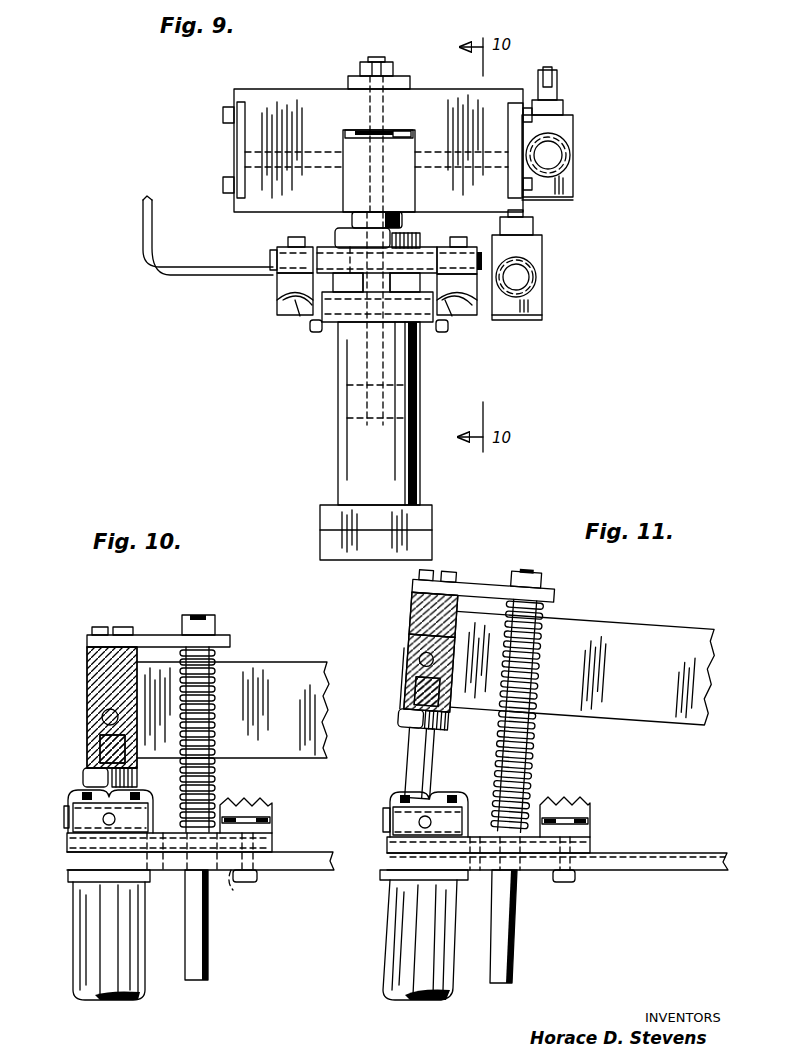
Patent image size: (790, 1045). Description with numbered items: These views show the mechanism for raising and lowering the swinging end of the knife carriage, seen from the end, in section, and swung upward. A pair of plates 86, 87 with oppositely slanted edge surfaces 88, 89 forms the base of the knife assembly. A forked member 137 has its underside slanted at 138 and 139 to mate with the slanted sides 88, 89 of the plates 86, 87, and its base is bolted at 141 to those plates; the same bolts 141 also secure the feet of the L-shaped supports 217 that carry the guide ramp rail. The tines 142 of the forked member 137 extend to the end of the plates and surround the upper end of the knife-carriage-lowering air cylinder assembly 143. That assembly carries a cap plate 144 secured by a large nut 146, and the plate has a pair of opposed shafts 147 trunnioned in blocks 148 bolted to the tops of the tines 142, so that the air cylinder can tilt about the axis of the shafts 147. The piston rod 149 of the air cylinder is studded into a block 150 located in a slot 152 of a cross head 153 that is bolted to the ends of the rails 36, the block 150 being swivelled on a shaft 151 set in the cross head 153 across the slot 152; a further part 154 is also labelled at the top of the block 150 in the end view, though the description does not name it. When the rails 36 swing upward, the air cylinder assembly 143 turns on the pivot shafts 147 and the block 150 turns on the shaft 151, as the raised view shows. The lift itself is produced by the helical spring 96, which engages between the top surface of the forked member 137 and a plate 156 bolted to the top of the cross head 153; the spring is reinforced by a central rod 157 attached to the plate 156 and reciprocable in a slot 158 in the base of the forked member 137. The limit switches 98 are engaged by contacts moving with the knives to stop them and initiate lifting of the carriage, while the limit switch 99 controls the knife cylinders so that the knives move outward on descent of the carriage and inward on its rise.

In FIG. 9, the rails 36 is at (237, 140).
In FIG. 10, the rails 36 is at (280, 668).
In FIG. 11, the rails 36 is at (636, 615).
In FIG. 9, the plate 86 is at (313, 332).
In FIG. 9, the plate 87 is at (441, 332).
In FIG. 9, the slanted edge surface 88 is at (292, 306).
In FIG. 9, the slanted edge surface 89 is at (467, 300).
In FIG. 10, the helical spring 96 is at (212, 670).
In FIG. 11, the helical spring 96 is at (541, 660).
In FIG. 9, the limit switches 98 is at (573, 128).
In FIG. 9, the limit switch 99 is at (543, 255).
In FIG. 10, the forked member 137 is at (177, 862).
In FIG. 11, the forked member 137 is at (530, 870).
In FIG. 9, the slanted underside 138 is at (300, 312).
In FIG. 9, the slanted underside 139 is at (455, 312).
In FIG. 9, the bolts 141 is at (415, 258).
In FIG. 10, the bolts 141 is at (272, 818).
In FIG. 11, the bolts 141 is at (590, 822).
In FIG. 9, the tines 142 is at (283, 296).
In FIG. 10, the tines 142 is at (72, 866).
In FIG. 11, the tines 142 is at (385, 866).
In FIG. 9, the knife-carriage-lowering air cylinder assembly 143 is at (300, 410).
In FIG. 9, the cap plate 144 is at (407, 267).
In FIG. 10, the cap plate 144 is at (70, 824).
In FIG. 11, the cap plate 144 is at (468, 825).
In FIG. 9, the large nut 146 is at (420, 232).
In FIG. 10, the large nut 146 is at (138, 786).
In FIG. 11, the large nut 146 is at (436, 795).
In FIG. 9, the shafts 147 is at (277, 259).
In FIG. 10, the shafts 147 is at (125, 815).
In FIG. 11, the shafts 147 is at (440, 808).
In FIG. 9, the blocks 148 is at (280, 277).
In FIG. 10, the blocks 148 is at (75, 822).
In FIG. 11, the blocks 148 is at (393, 822).
In FIG. 9, the piston rod 149 is at (385, 192).
In FIG. 11, the piston rod 149 is at (441, 752).
In FIG. 9, the block 150 is at (343, 186).
In FIG. 11, the block 150 is at (407, 650).
In FIG. 9, the shaft 151 is at (478, 150).
In FIG. 10, the shaft 151 is at (98, 735).
In FIG. 11, the shaft 151 is at (415, 682).
In FIG. 9, the slot 152 is at (405, 128).
In FIG. 9, the cross head 153 is at (487, 90).
In FIG. 10, the cross head 153 is at (87, 716).
In FIG. 11, the cross head 153 is at (410, 598).
In FIG. 9, the strip 154 is at (362, 130).
In FIG. 9, the plate 156 is at (410, 79).
In FIG. 10, the plate 156 is at (155, 637).
In FIG. 11, the plate 156 is at (548, 590).
In FIG. 9, the central rod 157 is at (367, 425).
In FIG. 10, the central rod 157 is at (208, 922).
In FIG. 11, the central rod 157 is at (514, 945).
In FIG. 9, the slot 158 is at (377, 297).
In FIG. 10, the slot 158 is at (262, 875).
In FIG. 11, the slot 158 is at (592, 841).
In FIG. 9, the L-shaped supports 217 is at (143, 225).
In FIG. 10, the L-shaped supports 217 is at (265, 802).
In FIG. 11, the L-shaped supports 217 is at (586, 802).